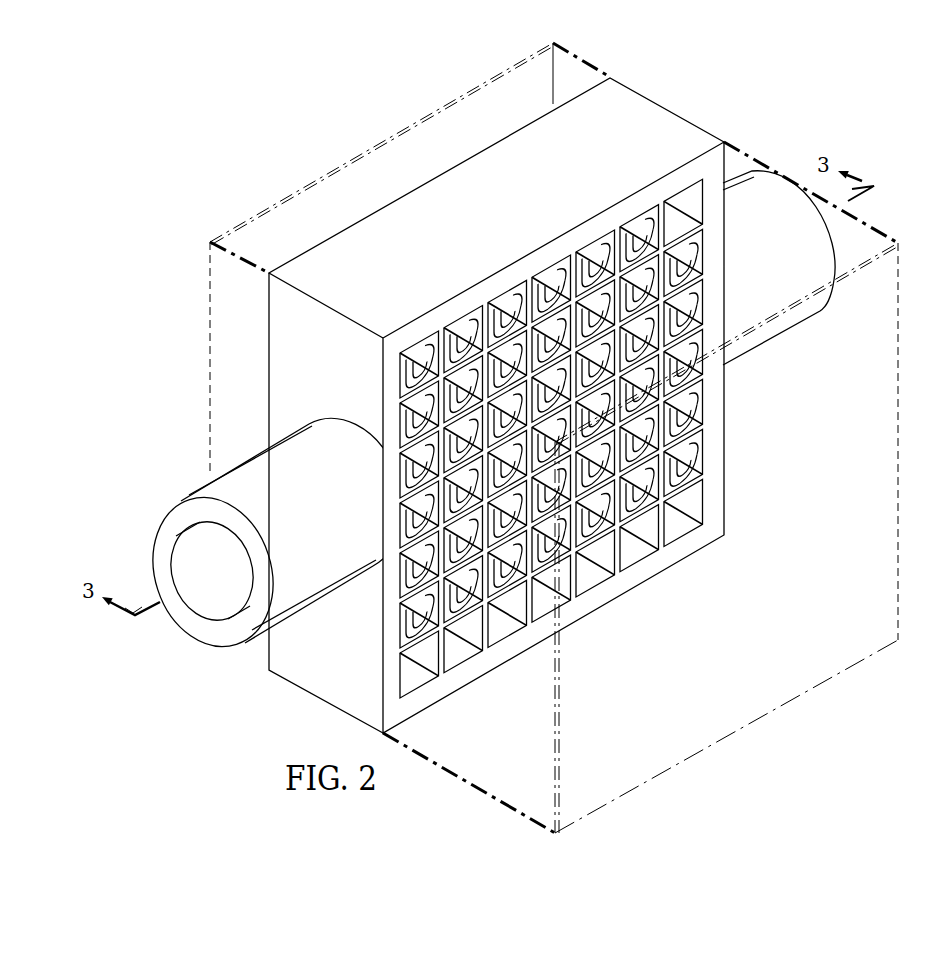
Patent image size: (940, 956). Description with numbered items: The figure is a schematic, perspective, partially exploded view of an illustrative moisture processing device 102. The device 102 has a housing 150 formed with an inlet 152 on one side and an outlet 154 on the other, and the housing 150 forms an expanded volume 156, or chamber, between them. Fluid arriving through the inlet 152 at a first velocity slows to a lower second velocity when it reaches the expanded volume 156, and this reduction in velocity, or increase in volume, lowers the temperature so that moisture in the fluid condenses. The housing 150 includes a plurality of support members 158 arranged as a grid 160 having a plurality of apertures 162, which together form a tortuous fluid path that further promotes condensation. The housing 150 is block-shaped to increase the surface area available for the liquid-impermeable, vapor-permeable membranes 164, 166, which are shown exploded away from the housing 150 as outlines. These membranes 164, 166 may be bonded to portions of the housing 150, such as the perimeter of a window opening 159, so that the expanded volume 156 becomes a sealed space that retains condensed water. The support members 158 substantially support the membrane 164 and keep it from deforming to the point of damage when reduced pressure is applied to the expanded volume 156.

The moisture processing device 102 is at (499, 388).
The housing 150 is at (690, 125).
The inlet 152 is at (775, 335).
The outlet 154 is at (222, 641).
The expanded volume 156 is at (692, 198).
The support members 158 is at (585, 247).
The window opening 159 is at (453, 672).
The grid 160 is at (546, 270).
The apertures 162 is at (466, 316).
The liquid-impermeable, vapor-permeable membrane 164 is at (763, 716).
The liquid-impermeable, vapor-permeable membrane 166 is at (348, 161).